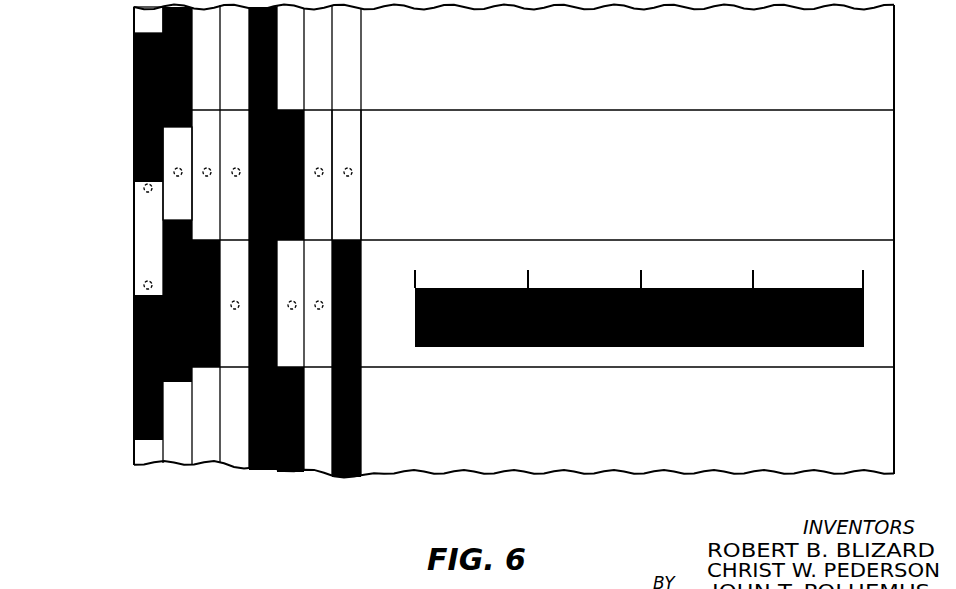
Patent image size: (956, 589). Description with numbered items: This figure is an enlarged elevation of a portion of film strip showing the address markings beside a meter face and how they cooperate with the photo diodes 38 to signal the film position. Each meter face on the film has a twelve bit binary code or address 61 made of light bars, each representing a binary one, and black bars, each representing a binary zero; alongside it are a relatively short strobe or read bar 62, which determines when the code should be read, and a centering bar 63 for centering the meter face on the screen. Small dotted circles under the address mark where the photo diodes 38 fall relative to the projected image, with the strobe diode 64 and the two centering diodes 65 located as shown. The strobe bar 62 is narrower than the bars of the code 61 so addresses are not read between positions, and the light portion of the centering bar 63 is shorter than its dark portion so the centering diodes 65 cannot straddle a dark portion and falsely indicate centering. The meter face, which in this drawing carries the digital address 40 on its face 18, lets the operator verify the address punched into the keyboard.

The front panel face plate 18 is at (895, 93).
The photo diodes 38 is at (236, 178).
The digital address 40 is at (447, 137).
The binary code address 61 is at (345, 140).
The strobe bar 62 is at (167, 214).
The centering bar 63 is at (141, 222).
The strobe diode 64 is at (175, 178).
The centering diodes 65 is at (144, 188).